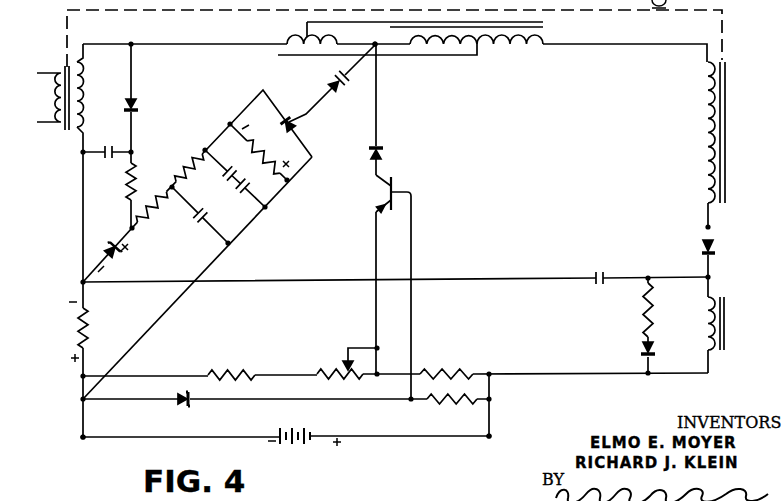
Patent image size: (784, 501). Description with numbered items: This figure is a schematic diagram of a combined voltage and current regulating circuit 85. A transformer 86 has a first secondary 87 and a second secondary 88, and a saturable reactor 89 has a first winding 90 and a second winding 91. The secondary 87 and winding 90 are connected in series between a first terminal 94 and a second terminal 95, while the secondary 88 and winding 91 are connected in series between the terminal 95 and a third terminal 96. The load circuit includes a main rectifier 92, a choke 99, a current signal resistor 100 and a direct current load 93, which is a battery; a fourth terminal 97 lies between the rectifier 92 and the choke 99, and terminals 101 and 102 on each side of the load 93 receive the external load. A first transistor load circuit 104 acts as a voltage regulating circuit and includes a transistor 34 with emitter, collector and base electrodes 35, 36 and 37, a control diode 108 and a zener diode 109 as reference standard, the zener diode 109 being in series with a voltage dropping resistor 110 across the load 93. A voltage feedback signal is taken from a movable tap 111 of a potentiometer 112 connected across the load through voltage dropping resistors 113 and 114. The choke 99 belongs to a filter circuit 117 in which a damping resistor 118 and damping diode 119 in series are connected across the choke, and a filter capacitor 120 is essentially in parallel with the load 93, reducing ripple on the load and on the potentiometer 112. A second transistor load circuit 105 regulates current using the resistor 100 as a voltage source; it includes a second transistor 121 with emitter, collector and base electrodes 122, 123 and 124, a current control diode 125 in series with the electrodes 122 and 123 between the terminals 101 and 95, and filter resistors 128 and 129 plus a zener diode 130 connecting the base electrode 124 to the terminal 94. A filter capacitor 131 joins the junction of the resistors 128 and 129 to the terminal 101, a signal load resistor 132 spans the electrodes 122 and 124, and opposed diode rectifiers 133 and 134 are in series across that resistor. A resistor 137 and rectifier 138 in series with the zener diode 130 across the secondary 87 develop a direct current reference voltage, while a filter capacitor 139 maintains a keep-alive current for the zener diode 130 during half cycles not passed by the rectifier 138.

The transistor 34 is at (393, 180).
The emitter electrode 35 is at (381, 206).
The collector electrode 36 is at (382, 185).
The base electrode 37 is at (411, 200).
The combined voltage and current regulating circuit 85 is at (525, 133).
The transformer 86 is at (66, 131).
The first secondary 87 is at (85, 103).
The second secondary 88 is at (707, 123).
The saturable reactor 89 is at (302, 56).
The first winding 90 is at (299, 33).
The second winding 91 is at (544, 42).
The main rectifier 92 is at (716, 246).
The direct current load 93 is at (312, 438).
The first terminal 94 is at (82, 282).
The second terminal 95 is at (376, 46).
The third terminal 96 is at (710, 228).
The fourth terminal 97 is at (710, 277).
The choke 99 is at (716, 298).
The current signal resistor 100 is at (89, 330).
The terminal 101 is at (82, 437).
The terminal 102 is at (490, 437).
The first transistor load circuit 104 is at (365, 262).
The second transistor load circuit 105 is at (175, 252).
The control diode 108 is at (384, 151).
The zener diode 109 is at (191, 392).
The voltage dropping resistor 110 is at (434, 398).
The movable tap 111 is at (345, 359).
The potentiometer 112 is at (328, 371).
The voltage dropping resistor 113 is at (236, 373).
The voltage dropping resistor 114 is at (436, 371).
The filter circuit 117 is at (690, 322).
The damping resistor 118 is at (645, 300).
The damping diode 119 is at (643, 358).
The filter capacitor 120 is at (608, 274).
The second transistor 121 is at (317, 103).
The emitter electrode 122 is at (292, 128).
The collector electrode 123 is at (304, 115).
The base electrode 124 is at (286, 110).
The current control diode 125 is at (349, 82).
The filter resistor 128 is at (186, 168).
The filter resistor 129 is at (156, 203).
The zener diode 130 is at (110, 241).
The filter capacitor 131 is at (208, 226).
The signal load resistor 132 is at (250, 141).
The diode rectifier 133 is at (226, 178).
The diode rectifier 134 is at (244, 191).
The resistor 137 is at (139, 169).
The rectifier 138 is at (134, 101).
The filter capacitor 139 is at (103, 148).